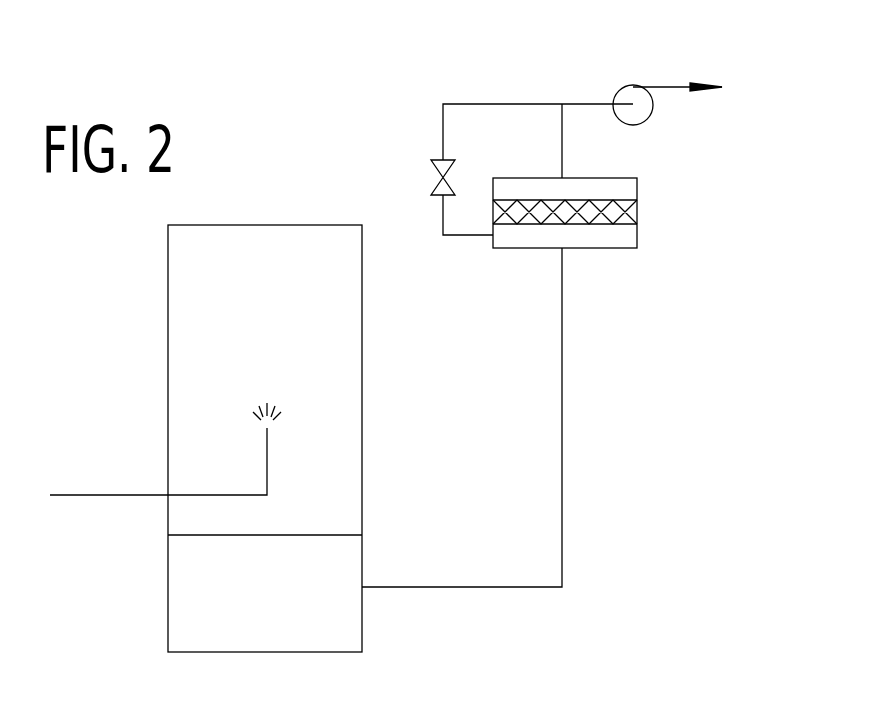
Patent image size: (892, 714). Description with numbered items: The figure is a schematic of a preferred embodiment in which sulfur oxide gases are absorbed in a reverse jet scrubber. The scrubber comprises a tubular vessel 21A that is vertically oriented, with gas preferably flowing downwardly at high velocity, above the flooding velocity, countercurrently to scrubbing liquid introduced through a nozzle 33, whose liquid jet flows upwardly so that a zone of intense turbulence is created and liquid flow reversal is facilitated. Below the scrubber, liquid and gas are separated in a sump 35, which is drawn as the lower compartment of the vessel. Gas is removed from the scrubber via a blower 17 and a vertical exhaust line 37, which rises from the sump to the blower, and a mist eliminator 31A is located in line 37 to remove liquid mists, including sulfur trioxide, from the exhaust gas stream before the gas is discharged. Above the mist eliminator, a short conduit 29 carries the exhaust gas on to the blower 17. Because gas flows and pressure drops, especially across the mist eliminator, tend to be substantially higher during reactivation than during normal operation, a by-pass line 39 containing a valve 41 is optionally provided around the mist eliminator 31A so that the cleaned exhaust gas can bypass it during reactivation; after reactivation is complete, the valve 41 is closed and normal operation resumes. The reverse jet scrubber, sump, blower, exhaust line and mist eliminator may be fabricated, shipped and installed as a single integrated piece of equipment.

The blower 17 is at (627, 86).
The tubular vessel 21A is at (362, 395).
The conduit 29 is at (563, 143).
The mist eliminator 31A is at (620, 212).
The nozzle 33 is at (267, 455).
The sump 35 is at (208, 575).
The vertical exhaust line 37 is at (562, 492).
The by-pass line 39 is at (460, 103).
The valve 41 is at (436, 167).